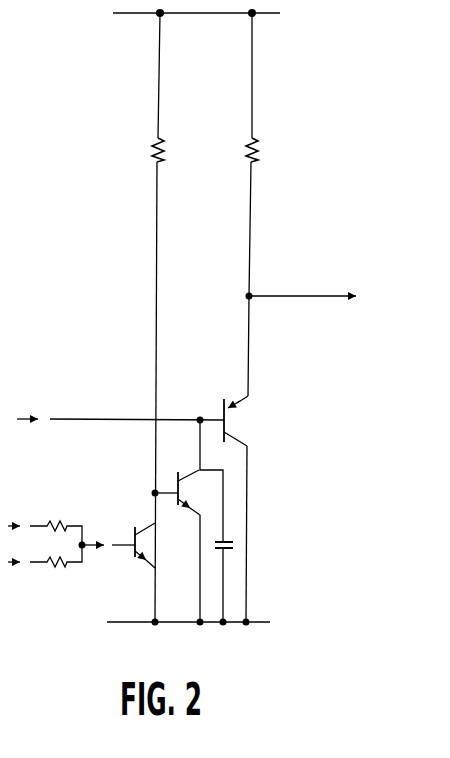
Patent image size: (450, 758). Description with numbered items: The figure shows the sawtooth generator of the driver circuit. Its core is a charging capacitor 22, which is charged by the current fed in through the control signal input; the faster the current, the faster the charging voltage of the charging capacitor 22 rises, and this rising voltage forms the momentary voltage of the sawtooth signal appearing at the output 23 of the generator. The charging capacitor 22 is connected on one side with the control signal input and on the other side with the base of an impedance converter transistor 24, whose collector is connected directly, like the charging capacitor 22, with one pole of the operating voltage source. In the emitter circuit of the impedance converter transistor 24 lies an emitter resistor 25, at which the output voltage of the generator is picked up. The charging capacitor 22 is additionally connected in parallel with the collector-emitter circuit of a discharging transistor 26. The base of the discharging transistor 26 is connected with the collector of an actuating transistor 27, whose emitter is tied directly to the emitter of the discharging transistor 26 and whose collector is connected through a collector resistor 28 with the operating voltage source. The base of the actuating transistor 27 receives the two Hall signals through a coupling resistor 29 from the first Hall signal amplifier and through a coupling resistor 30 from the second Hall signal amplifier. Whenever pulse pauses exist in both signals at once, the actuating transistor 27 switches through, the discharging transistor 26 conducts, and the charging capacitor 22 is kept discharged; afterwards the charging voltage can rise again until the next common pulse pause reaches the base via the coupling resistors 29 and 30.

The charging capacitor 22 is at (230, 541).
The output of sawtooth generator 23 is at (349, 292).
The impedance converter transistor 24 is at (232, 418).
The emitter resistor 25 is at (258, 149).
The discharging transistor 26 is at (177, 476).
The actuating transistor 27 is at (133, 558).
The collector resistor 28 is at (151, 153).
The coupling resistor 29 is at (58, 521).
The coupling resistor 30 is at (60, 570).